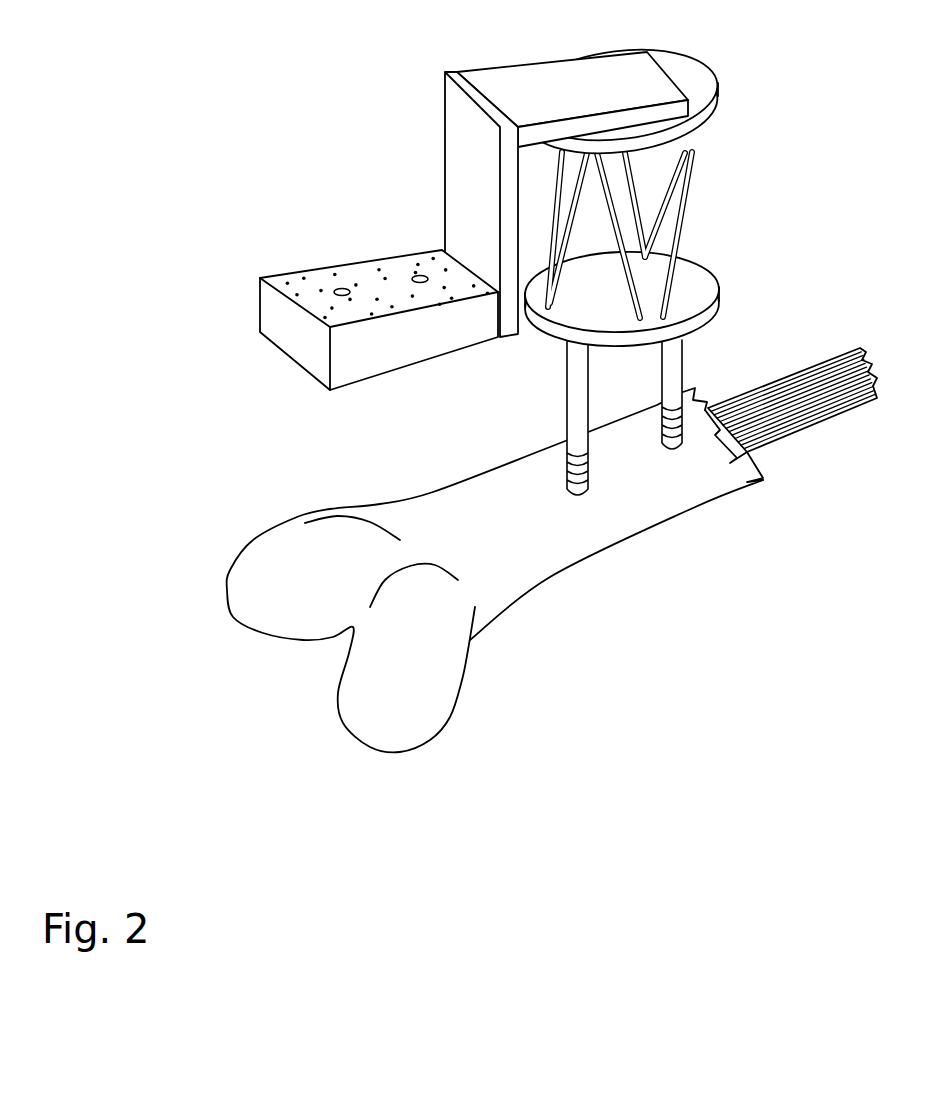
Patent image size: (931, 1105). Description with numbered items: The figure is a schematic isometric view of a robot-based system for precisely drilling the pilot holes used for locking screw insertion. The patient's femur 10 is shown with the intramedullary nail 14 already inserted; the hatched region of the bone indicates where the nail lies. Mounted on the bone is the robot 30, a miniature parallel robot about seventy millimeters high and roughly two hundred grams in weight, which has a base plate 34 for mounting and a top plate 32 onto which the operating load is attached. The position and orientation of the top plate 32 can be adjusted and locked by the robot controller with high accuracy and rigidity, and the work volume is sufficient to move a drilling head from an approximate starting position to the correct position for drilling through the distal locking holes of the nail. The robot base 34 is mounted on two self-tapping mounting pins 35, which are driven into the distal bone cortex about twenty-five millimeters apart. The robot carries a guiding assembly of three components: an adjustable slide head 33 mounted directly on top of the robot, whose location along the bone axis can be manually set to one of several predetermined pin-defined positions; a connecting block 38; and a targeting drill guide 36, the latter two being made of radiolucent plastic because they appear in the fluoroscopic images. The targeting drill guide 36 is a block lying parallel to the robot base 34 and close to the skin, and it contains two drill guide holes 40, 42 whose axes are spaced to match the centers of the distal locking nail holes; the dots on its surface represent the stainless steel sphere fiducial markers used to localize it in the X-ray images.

The femur 10 is at (605, 553).
The intramedullary nail 14 is at (792, 433).
The robot 30 is at (690, 198).
The top plate 32 is at (717, 78).
The adjustable slide head 33 is at (543, 60).
The base plate 34 is at (719, 287).
The mounting pins 35 is at (685, 355).
The targeting drill guide 36 is at (370, 386).
The connecting block 38 is at (445, 130).
The drill guide hole 40 is at (342, 288).
The drill guide hole 42 is at (418, 276).